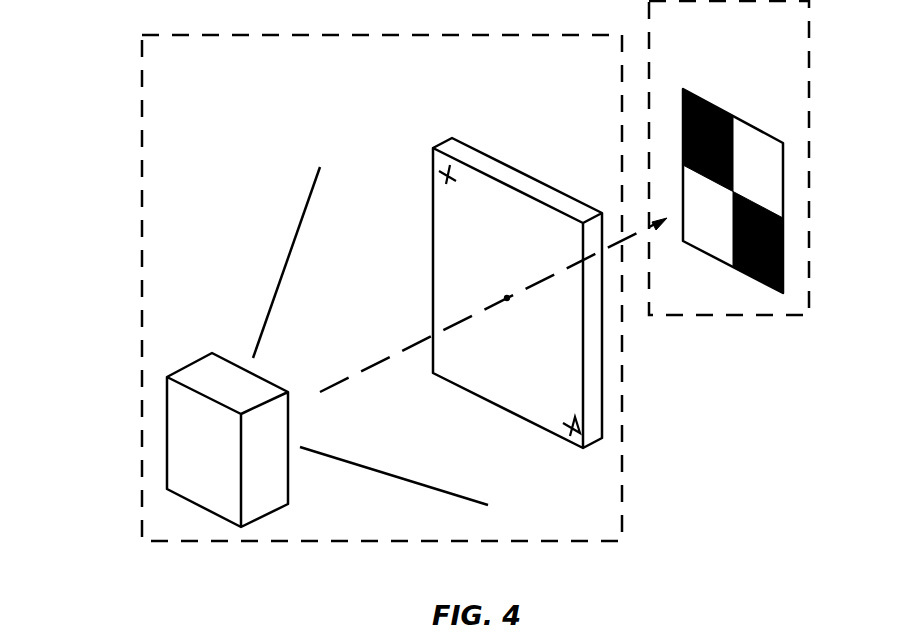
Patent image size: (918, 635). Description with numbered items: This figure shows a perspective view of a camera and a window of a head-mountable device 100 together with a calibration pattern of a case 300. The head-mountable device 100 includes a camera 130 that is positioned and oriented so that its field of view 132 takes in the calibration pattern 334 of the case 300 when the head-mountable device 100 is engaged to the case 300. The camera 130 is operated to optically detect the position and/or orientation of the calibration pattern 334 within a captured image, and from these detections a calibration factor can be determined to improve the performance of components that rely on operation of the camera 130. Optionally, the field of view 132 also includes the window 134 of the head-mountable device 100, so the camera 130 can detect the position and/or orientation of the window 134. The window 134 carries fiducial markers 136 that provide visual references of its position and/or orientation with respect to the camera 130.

The head-mountable device 100 is at (141, 141).
The camera 130 is at (177, 367).
The field of view 132 is at (302, 218).
The window 134 is at (437, 146).
The fiducial markers 136 is at (442, 170).
The case 300 is at (721, 316).
The calibration pattern 334 is at (722, 108).